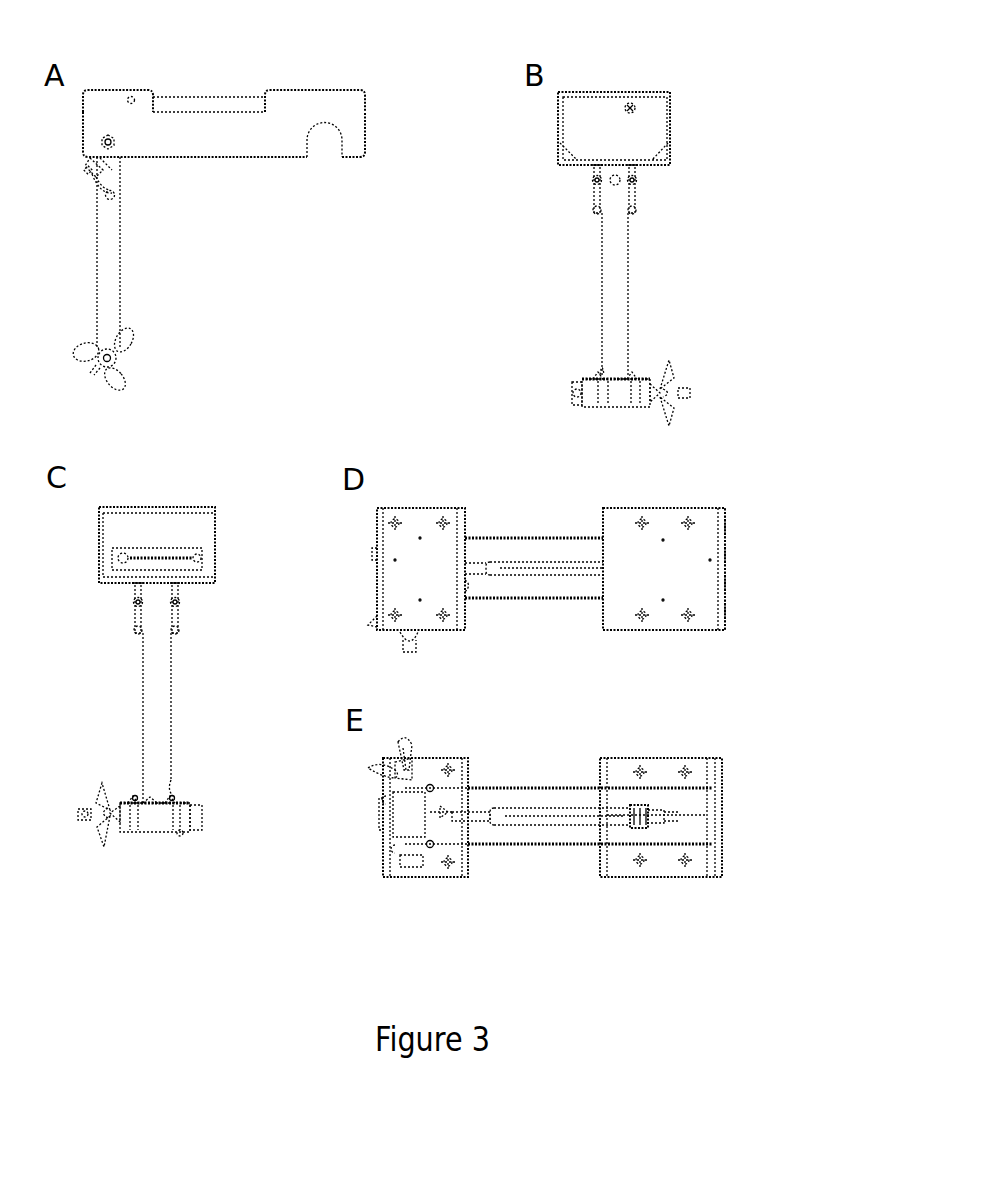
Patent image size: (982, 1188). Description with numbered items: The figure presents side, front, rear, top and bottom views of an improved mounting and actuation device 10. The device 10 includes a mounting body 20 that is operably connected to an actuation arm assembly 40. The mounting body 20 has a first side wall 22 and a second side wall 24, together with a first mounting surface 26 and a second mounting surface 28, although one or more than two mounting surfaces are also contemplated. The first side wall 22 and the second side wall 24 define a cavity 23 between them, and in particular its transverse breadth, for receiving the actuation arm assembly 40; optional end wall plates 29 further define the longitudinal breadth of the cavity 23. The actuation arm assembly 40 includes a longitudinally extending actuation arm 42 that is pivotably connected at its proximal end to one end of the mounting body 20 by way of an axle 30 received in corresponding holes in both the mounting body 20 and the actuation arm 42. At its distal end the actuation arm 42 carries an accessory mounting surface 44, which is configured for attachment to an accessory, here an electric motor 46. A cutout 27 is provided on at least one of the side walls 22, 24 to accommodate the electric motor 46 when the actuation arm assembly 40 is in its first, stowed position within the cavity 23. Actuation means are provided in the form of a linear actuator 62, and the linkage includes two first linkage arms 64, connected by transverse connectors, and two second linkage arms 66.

In FIG. 3E, the mounting and actuation device 10 is at (481, 917).
In FIG. 3A, the mounting body 20 is at (223, 54).
In FIG. 3B, the mounting body 20 is at (698, 63).
In FIG. 3C, the mounting body 20 is at (186, 474).
In FIG. 3D, the mounting body 20 is at (565, 489).
In FIG. 3A, the first side wall 22 is at (225, 138).
In FIG. 3D, the first side wall 22 is at (523, 602).
In FIG. 3E, the first side wall 22 is at (537, 787).
In FIG. 3D, the cavity 23 is at (545, 555).
In FIG. 3E, the cavity 23 is at (573, 832).
In FIG. 3D, the second side wall 24 is at (500, 537).
In FIG. 3E, the second side wall 24 is at (510, 847).
In FIG. 3D, the first mounting surface 26 is at (703, 525).
In FIG. 3E, the first mounting surface 26 is at (688, 768).
In FIG. 3A, the cutout 27 is at (322, 143).
In FIG. 3D, the second mounting surface 28 is at (428, 522).
In FIG. 3E, the second mounting surface 28 is at (445, 765).
In FIG. 3A, the end wall plates 29 is at (85, 120).
In FIG. 3B, the end wall plates 29 is at (650, 137).
In FIG. 3C, the end wall plates 29 is at (202, 532).
In FIG. 3D, the end wall plates 29 is at (377, 590).
In FIG. 3E, the end wall plates 29 is at (382, 817).
In FIG. 3A, the axle 30 is at (100, 142).
In FIG. 3A, the actuation arm assembly 40 is at (238, 303).
In FIG. 3B, the actuation arm assembly 40 is at (699, 295).
In FIG. 3C, the actuation arm assembly 40 is at (209, 708).
In FIG. 3A, the actuation arm 42 is at (117, 307).
In FIG. 3B, the actuation arm 42 is at (613, 267).
In FIG. 3C, the actuation arm 42 is at (150, 691).
In FIG. 3B, the accessory mounting surface 44 is at (590, 373).
In FIG. 3C, the accessory mounting surface 44 is at (132, 798).
In FIG. 3A, the electric motor 46 is at (123, 355).
In FIG. 3B, the electric motor 46 is at (610, 393).
In FIG. 3C, the electric motor 46 is at (147, 818).
In FIG. 3E, the electric motor 46 is at (402, 822).
In FIG. 3D, the linear actuator 62 is at (535, 567).
In FIG. 3E, the linear actuator 62 is at (523, 815).
In FIG. 3A, the first linkage arms 64 is at (102, 160).
In FIG. 3B, the first linkage arms 64 is at (592, 175).
In FIG. 3C, the first linkage arms 64 is at (133, 592).
In FIG. 3A, the second linkage arms 66 is at (112, 190).
In FIG. 3B, the second linkage arms 66 is at (595, 200).
In FIG. 3C, the second linkage arms 66 is at (135, 617).